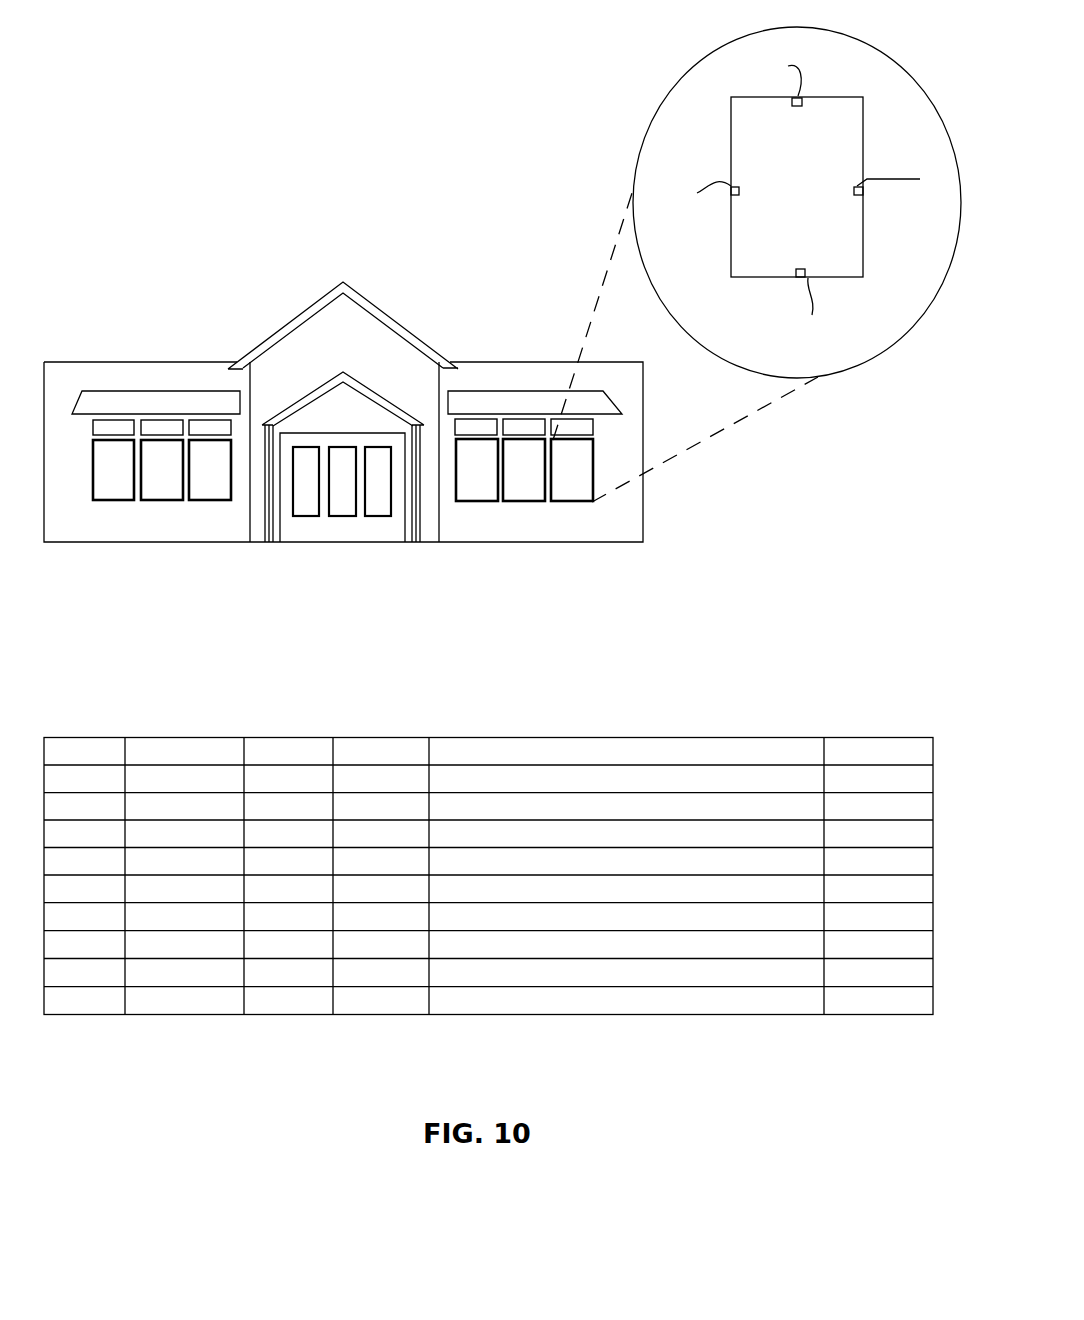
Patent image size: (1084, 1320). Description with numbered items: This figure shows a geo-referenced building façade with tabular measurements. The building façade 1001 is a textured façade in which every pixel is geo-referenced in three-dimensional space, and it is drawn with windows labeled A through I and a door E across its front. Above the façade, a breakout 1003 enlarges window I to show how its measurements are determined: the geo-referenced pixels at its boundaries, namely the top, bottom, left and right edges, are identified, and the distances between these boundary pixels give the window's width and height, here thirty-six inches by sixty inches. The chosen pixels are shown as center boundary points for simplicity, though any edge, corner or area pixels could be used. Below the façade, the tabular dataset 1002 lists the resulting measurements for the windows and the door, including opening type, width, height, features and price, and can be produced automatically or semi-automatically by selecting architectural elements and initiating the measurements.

The building façade 1001 is at (550, 543).
The tabular dataset 1002 is at (708, 1015).
The breakout 1003 is at (818, 360).